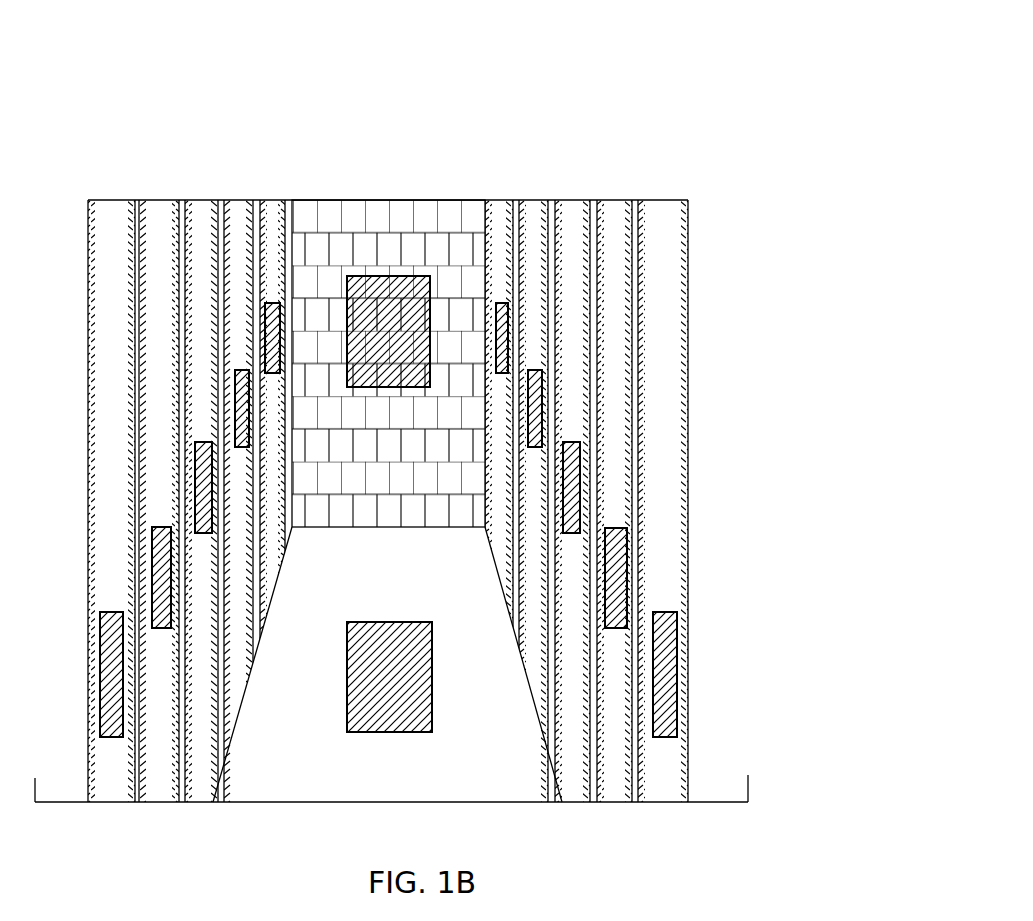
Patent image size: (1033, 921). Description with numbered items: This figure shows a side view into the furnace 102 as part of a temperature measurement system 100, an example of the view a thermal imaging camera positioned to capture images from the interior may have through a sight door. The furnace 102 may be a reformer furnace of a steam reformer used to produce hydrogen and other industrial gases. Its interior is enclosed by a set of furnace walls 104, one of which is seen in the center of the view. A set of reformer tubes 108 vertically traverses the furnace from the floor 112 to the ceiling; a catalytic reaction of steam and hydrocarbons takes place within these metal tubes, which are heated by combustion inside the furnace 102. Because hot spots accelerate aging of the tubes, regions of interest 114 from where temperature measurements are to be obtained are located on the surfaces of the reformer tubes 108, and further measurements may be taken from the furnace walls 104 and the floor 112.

The temperature measurement system 100 is at (719, 97).
The furnace 102 is at (473, 208).
The furnace walls 104 is at (453, 288).
The reformer tubes 108 is at (657, 407).
The floor 112 is at (527, 762).
The regions of interest 114 is at (242, 416).